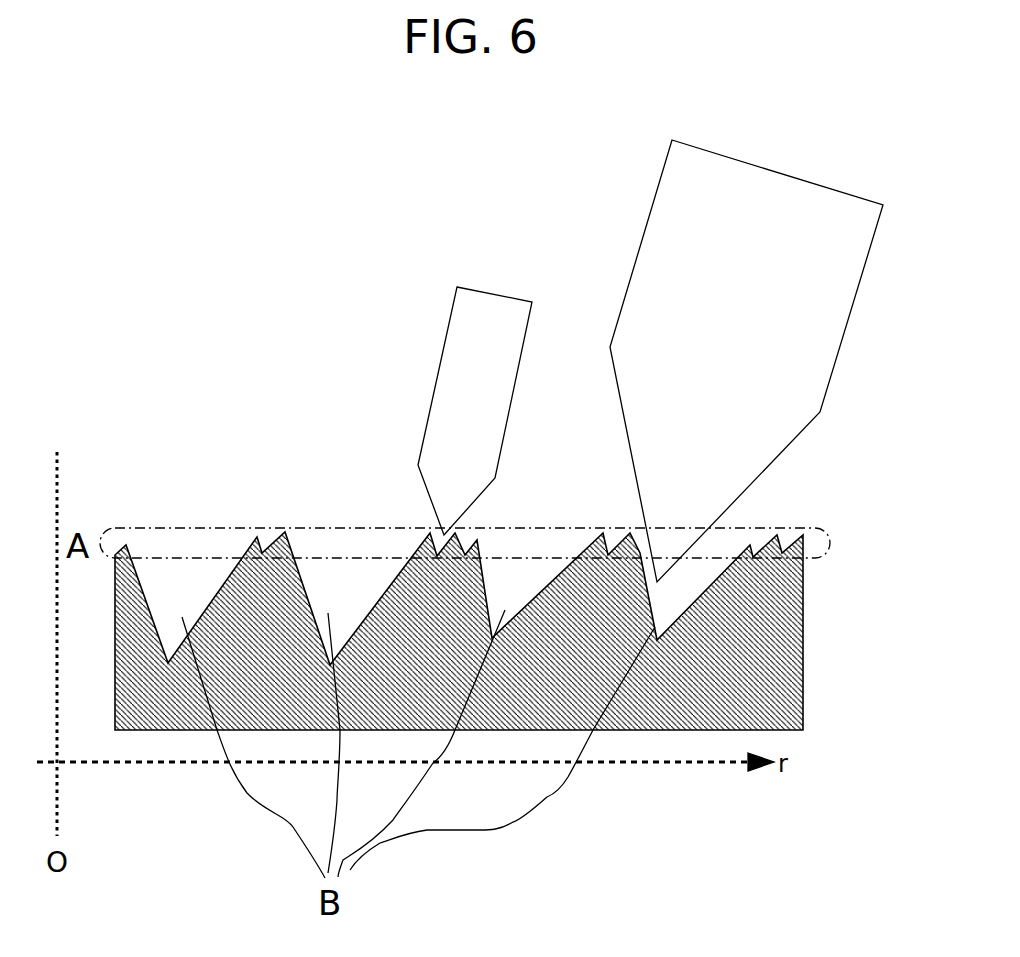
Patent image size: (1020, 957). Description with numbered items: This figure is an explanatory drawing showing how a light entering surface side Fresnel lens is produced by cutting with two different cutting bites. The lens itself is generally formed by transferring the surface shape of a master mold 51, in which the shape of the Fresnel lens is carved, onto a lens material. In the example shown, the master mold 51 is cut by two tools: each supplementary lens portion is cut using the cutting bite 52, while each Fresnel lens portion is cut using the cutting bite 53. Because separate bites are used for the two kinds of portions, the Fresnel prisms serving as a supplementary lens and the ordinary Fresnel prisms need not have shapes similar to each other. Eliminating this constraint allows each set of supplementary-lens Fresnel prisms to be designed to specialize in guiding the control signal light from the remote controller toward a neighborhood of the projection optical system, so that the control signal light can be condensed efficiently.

The master mold 51 is at (790, 640).
The cutting bite 52 is at (493, 306).
The cutting bite 53 is at (775, 186).